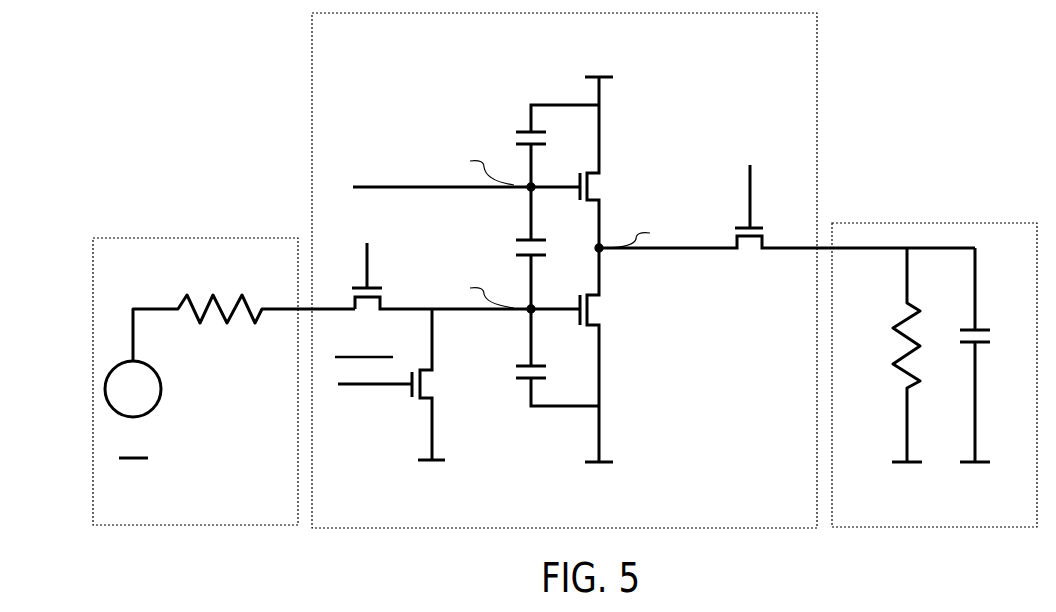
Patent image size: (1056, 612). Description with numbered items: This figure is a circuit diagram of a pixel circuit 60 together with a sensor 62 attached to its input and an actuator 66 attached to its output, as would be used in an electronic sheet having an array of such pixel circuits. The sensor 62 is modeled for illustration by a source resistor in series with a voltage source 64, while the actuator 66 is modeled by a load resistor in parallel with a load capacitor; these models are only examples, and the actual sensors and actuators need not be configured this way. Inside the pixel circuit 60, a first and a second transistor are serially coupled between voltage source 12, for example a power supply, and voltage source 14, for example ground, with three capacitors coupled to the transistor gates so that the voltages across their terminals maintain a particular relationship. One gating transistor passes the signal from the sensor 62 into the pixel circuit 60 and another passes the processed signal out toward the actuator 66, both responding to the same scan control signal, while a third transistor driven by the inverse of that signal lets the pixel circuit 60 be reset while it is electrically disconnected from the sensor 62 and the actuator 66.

The pixel circuit 60 is at (312, 54).
The sensor 62 is at (160, 238).
The voltage source 64 is at (162, 382).
The actuator 66 is at (930, 220).
The voltage source 12 is at (593, 74).
The voltage source 14 is at (137, 462).